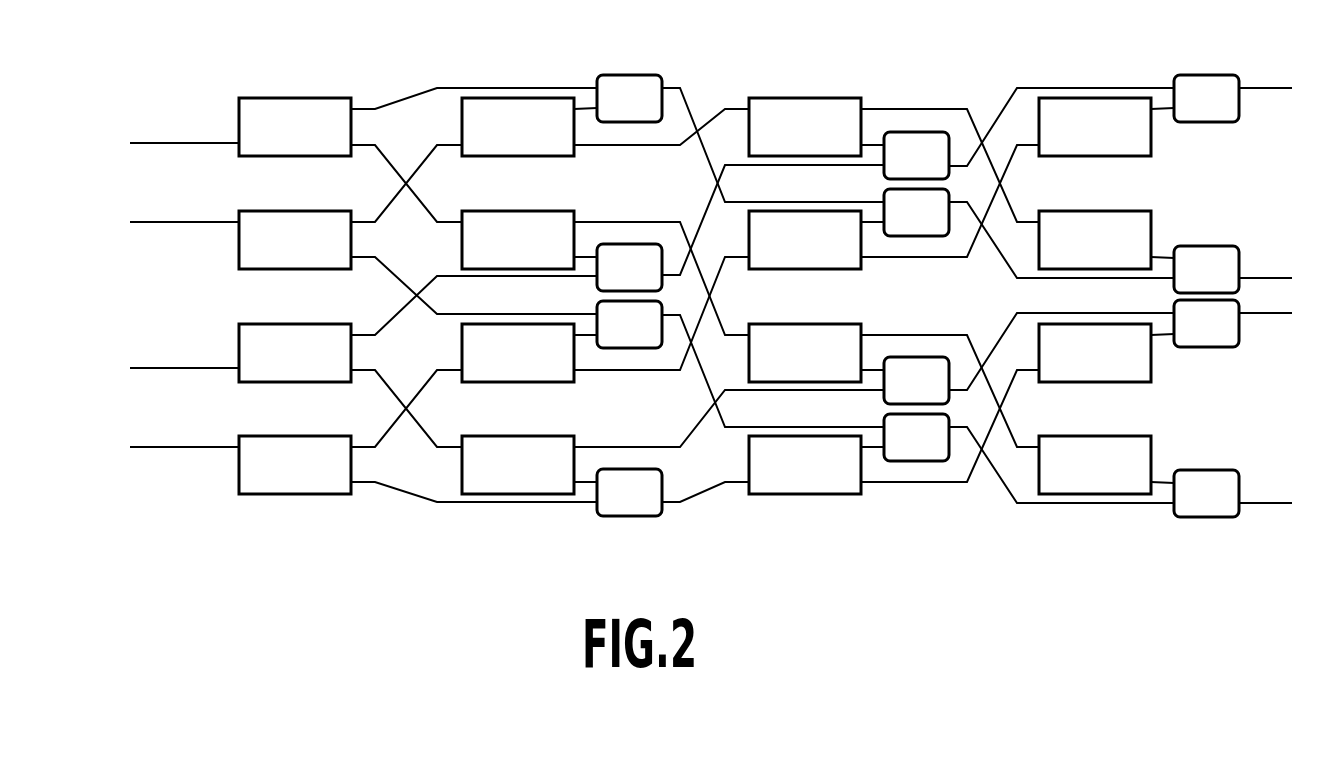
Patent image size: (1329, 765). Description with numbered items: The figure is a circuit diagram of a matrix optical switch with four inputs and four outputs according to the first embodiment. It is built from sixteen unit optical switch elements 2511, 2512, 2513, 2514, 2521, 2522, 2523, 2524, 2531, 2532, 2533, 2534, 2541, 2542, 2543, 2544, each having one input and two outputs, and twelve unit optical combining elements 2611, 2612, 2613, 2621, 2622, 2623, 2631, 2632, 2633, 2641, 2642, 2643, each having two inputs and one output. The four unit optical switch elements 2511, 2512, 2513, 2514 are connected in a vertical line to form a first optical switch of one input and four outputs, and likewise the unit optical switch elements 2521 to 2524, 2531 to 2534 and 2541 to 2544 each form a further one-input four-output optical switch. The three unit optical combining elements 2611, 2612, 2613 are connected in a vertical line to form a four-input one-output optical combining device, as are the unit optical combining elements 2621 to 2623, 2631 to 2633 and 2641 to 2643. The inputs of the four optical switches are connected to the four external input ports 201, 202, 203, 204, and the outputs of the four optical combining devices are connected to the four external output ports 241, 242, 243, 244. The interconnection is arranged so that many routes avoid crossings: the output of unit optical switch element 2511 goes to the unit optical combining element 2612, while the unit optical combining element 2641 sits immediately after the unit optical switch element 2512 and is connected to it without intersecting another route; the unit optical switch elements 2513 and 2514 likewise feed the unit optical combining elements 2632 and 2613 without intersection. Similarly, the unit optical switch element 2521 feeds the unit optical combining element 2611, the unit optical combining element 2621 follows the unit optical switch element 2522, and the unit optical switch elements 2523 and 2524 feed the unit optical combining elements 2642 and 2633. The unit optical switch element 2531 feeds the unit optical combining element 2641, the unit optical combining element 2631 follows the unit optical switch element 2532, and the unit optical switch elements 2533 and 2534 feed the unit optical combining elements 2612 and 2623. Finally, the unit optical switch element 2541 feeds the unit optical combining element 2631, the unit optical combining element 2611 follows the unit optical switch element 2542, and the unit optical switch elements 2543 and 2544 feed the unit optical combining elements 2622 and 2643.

The external input port 201 is at (159, 142).
The external input port 202 is at (159, 222).
The external input port 203 is at (159, 368).
The external input port 204 is at (159, 447).
The external output port 241 is at (1273, 503).
The external output port 242 is at (1271, 318).
The external output port 243 is at (1271, 278).
The external output port 244 is at (1273, 88).
The unit optical switch element 2511 is at (267, 142).
The unit optical switch element 2512 is at (490, 255).
The unit optical switch element 2513 is at (777, 368).
The unit optical switch element 2514 is at (1067, 480).
The unit optical switch element 2521 is at (267, 255).
The unit optical switch element 2522 is at (490, 142).
The unit optical switch element 2523 is at (777, 142).
The unit optical switch element 2524 is at (1067, 255).
The unit optical switch element 2531 is at (267, 368).
The unit optical switch element 2532 is at (490, 480).
The unit optical switch element 2533 is at (777, 480).
The unit optical switch element 2534 is at (1067, 368).
The unit optical switch element 2541 is at (267, 480).
The unit optical switch element 2542 is at (490, 368).
The unit optical switch element 2543 is at (777, 255).
The unit optical switch element 2544 is at (1067, 142).
The unit optical combining element 2611 is at (603, 339).
The unit optical combining element 2612 is at (890, 452).
The unit optical combining element 2613 is at (1180, 508).
The unit optical combining element 2621 is at (603, 113).
The unit optical combining element 2622 is at (890, 227).
The unit optical combining element 2623 is at (1180, 338).
The unit optical combining element 2631 is at (603, 507).
The unit optical combining element 2632 is at (890, 395).
The unit optical combining element 2633 is at (1180, 284).
The unit optical combining element 2641 is at (603, 282).
The unit optical combining element 2642 is at (890, 170).
The unit optical combining element 2643 is at (1180, 113).